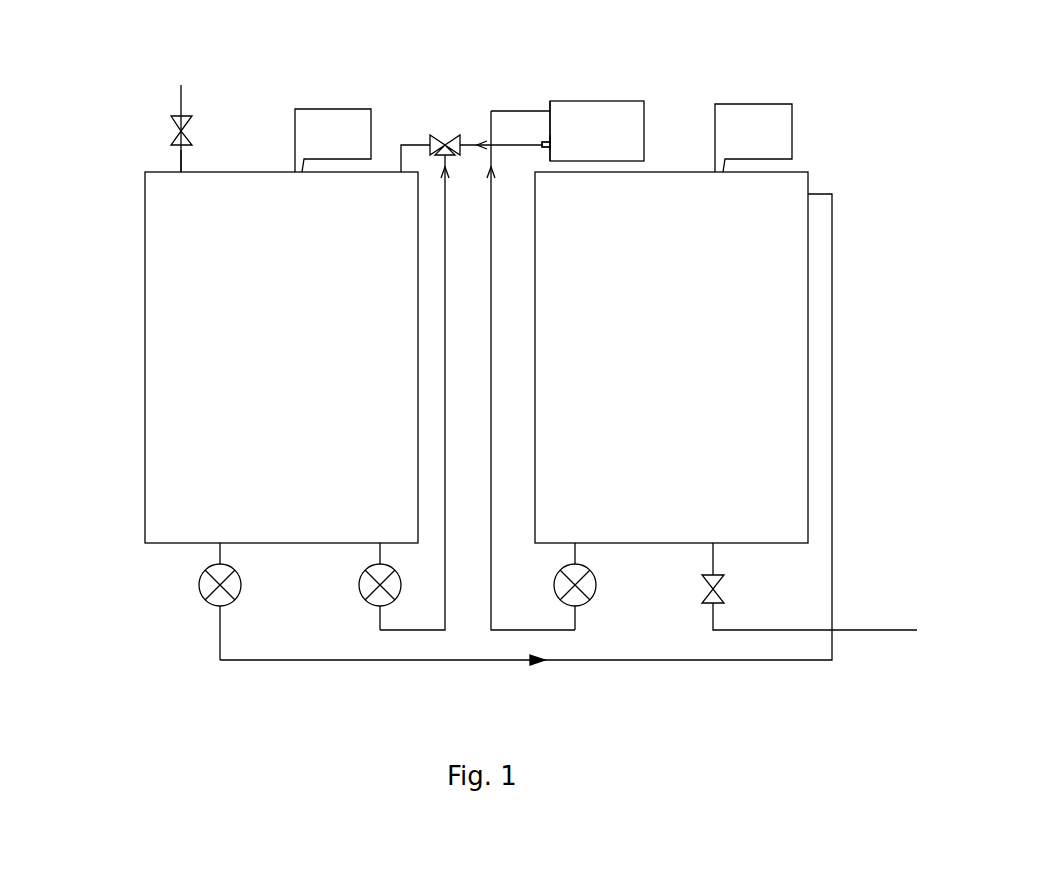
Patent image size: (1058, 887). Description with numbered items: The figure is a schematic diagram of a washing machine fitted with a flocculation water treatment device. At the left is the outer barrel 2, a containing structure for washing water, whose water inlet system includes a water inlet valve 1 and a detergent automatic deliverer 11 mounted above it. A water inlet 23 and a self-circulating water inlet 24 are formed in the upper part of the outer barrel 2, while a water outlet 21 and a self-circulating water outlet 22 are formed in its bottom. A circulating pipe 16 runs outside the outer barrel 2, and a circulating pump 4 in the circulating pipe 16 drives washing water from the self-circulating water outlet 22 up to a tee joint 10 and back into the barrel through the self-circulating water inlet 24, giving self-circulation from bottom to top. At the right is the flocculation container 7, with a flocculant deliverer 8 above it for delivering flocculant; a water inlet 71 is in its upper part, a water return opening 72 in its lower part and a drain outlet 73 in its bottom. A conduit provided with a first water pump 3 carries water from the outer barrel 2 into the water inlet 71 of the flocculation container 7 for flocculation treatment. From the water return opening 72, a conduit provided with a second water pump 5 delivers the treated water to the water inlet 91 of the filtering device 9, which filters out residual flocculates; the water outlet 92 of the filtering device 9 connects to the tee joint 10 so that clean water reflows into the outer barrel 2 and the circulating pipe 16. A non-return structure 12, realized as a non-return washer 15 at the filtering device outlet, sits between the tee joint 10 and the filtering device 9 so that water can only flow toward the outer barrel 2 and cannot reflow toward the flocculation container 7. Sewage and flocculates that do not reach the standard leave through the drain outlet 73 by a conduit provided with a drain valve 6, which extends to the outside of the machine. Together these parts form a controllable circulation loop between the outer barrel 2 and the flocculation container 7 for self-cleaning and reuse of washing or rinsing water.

The water inlet valve 1 is at (176, 126).
The outer barrel 2 is at (172, 397).
The first water pump 3 is at (213, 593).
The circulating pump 4 is at (373, 595).
The second water pump 5 is at (577, 598).
The drain valve 6 is at (718, 603).
The flocculation container 7 is at (782, 437).
The flocculant deliverer 8 is at (783, 137).
The filtering device 9 is at (607, 122).
The tee joint 10 is at (446, 146).
The detergent automatic deliverer 11 is at (315, 123).
The non-return structure 12 is at (542, 141).
The non-return washer 15 is at (546, 144).
The circulating pipe 16 is at (412, 632).
The water outlet 21 is at (220, 543).
The self-circulating water outlet 22 is at (378, 545).
The water inlet 23 is at (180, 173).
The self-circulating water inlet 24 is at (400, 171).
The water inlet 71 is at (808, 195).
The water return opening 72 is at (575, 545).
The drain outlet 73 is at (713, 543).
The water inlet 91 is at (551, 109).
The water outlet 92 is at (550, 142).